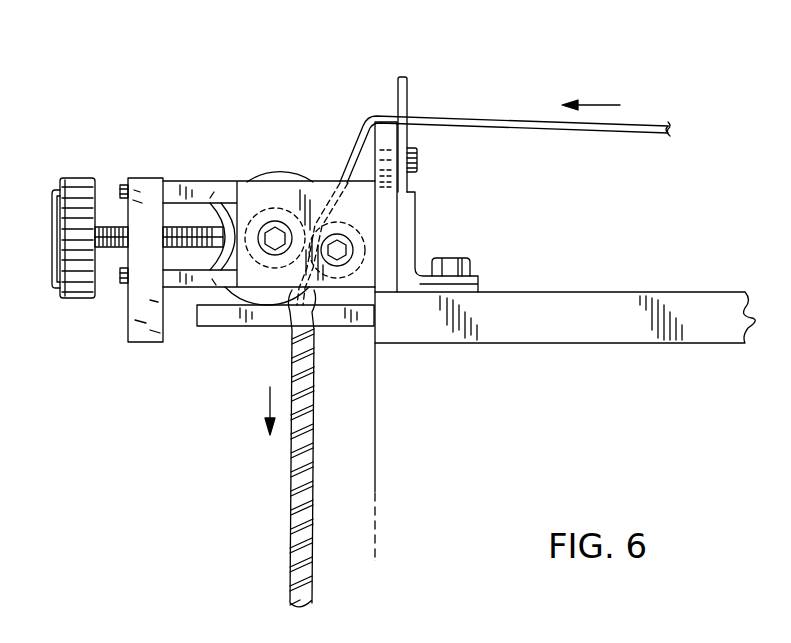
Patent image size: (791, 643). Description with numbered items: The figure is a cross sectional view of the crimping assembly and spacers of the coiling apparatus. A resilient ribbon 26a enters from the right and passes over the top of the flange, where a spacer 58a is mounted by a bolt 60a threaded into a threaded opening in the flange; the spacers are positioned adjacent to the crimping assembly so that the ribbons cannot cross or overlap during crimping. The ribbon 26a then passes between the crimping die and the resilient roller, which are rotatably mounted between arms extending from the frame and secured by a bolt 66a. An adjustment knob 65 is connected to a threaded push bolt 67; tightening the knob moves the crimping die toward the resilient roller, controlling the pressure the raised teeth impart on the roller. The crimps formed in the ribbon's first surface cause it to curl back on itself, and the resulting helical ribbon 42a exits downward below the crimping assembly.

The threaded push bolt 67 is at (108, 226).
The adjustment knob 65 is at (52, 258).
The bolt 66a is at (340, 250).
The spacer 58a is at (405, 92).
The bolt 60a is at (418, 158).
The ribbon 26a is at (586, 130).
The helical ribbon 42a is at (292, 512).